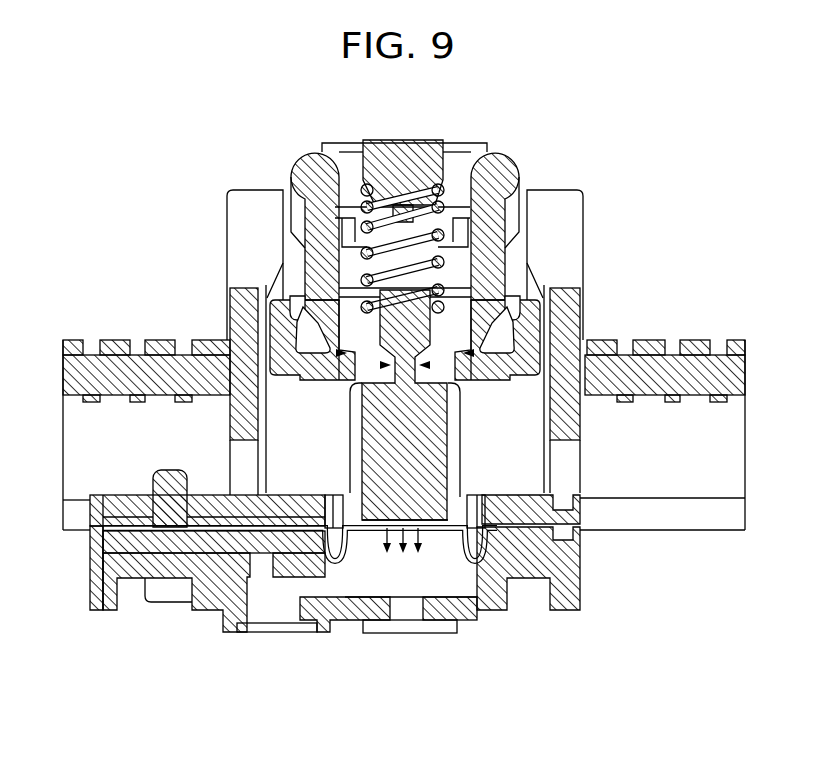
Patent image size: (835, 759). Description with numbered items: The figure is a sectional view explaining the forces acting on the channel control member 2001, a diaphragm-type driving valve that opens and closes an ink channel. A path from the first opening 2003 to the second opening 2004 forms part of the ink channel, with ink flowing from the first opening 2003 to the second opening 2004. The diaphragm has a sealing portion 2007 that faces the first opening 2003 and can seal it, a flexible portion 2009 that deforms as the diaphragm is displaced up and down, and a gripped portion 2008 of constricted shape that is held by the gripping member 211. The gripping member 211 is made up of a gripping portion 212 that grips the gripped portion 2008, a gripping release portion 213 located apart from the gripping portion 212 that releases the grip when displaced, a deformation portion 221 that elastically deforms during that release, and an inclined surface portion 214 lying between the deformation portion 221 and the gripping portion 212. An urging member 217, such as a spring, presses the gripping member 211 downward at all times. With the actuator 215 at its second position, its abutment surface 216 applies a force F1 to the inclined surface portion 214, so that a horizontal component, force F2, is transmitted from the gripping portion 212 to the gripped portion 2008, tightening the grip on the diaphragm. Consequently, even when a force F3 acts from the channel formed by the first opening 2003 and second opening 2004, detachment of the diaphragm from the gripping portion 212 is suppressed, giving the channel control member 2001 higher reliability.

The channel control member 2001 is at (198, 166).
The urging member 217 is at (493, 153).
The gripping release portion 213 is at (512, 167).
The deformation portion 221 is at (493, 228).
The gripping member 211 is at (492, 260).
The gripping portion 212 is at (492, 290).
The gripped portion 2008 is at (518, 300).
The inclined surface portion 214 is at (563, 313).
The abutment surface 216 is at (480, 353).
The actuator 215 is at (533, 352).
The flexible portion 2009 is at (347, 560).
The second opening 2004 is at (275, 595).
The first opening 2003 is at (400, 603).
The sealing portion 2007 is at (400, 525).
The force F1 is at (487, 363).
The force F2 is at (422, 363).
The force F3 is at (427, 537).